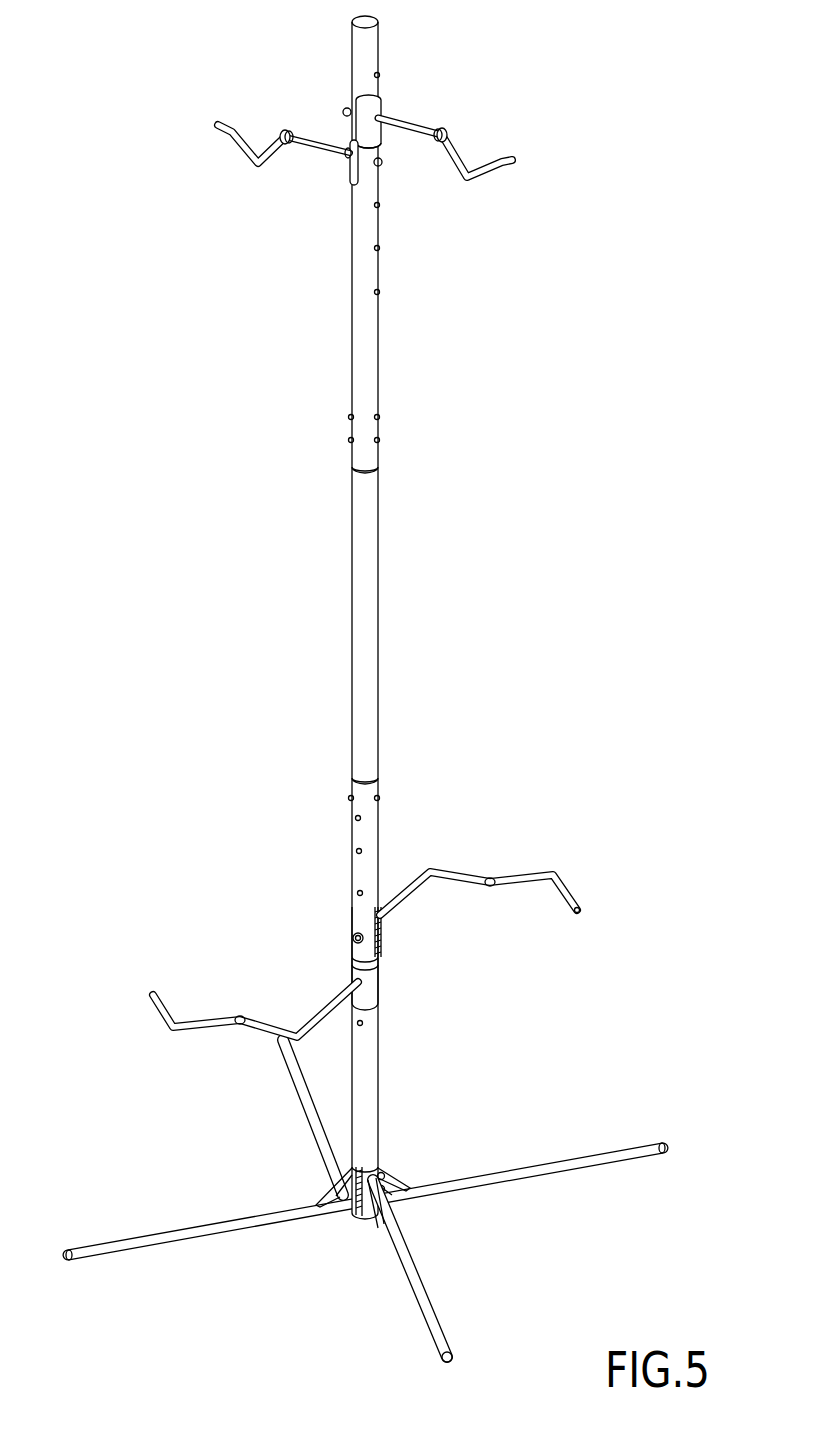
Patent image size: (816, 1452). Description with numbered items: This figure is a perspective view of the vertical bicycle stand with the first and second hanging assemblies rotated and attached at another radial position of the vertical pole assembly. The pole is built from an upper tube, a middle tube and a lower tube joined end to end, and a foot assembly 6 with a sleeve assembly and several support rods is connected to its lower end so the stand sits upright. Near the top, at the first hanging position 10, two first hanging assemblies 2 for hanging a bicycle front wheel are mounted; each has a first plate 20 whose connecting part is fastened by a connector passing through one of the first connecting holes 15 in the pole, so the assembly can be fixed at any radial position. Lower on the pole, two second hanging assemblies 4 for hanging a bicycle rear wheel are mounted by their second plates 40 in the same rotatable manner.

The first hanging assembly 2 is at (503, 138).
The second hanging assembly 4 is at (566, 857).
The foot assembly 6 is at (331, 1251).
The first hanging position 10 is at (367, 591).
The first connecting hole 15 is at (378, 75).
The first plate 20 is at (376, 135).
The second plate 40 is at (383, 933).